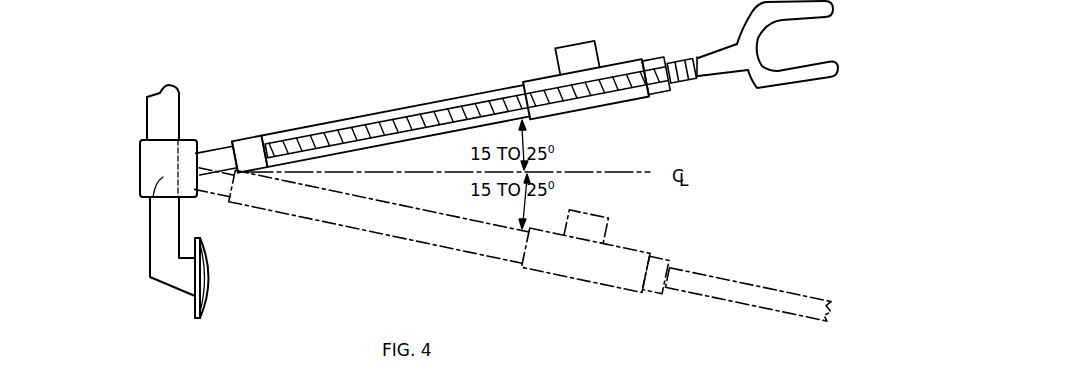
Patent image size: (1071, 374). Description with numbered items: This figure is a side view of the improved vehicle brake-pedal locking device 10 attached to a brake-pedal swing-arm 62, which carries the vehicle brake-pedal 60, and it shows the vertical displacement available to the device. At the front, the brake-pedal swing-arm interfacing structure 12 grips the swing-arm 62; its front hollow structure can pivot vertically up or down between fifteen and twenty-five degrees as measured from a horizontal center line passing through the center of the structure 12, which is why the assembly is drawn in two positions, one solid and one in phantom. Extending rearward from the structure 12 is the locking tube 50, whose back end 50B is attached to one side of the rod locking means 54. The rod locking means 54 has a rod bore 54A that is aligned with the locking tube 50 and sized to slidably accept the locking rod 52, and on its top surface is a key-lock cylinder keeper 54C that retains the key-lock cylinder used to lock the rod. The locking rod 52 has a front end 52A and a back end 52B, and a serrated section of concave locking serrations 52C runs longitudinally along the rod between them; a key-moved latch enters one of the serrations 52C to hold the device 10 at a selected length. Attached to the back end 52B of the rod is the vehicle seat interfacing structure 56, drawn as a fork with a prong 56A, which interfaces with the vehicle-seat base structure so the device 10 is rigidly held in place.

The improved vehicle brake-pedal locking device 10 is at (140, 73).
The brake-pedal swing-arm interfacing structure 12 is at (150, 200).
The locking tube 50 is at (303, 126).
The back end of the locking tube 50B is at (732, 47).
The locking rod 52 is at (548, 190).
The front end of the locking rod 52A is at (263, 156).
The back end of the locking rod 52B is at (750, 72).
The locking serrations 52C is at (383, 124).
The rod locking means 54 is at (590, 154).
The rod bore 54A is at (586, 89).
The key-lock cylinder keeper 54C is at (583, 24).
The vehicle seat interfacing structure 56 is at (790, 85).
The fork prong 56A is at (813, 72).
The vehicle brake-pedal 60 is at (208, 278).
The brake-pedal swing-arm 62 is at (165, 251).